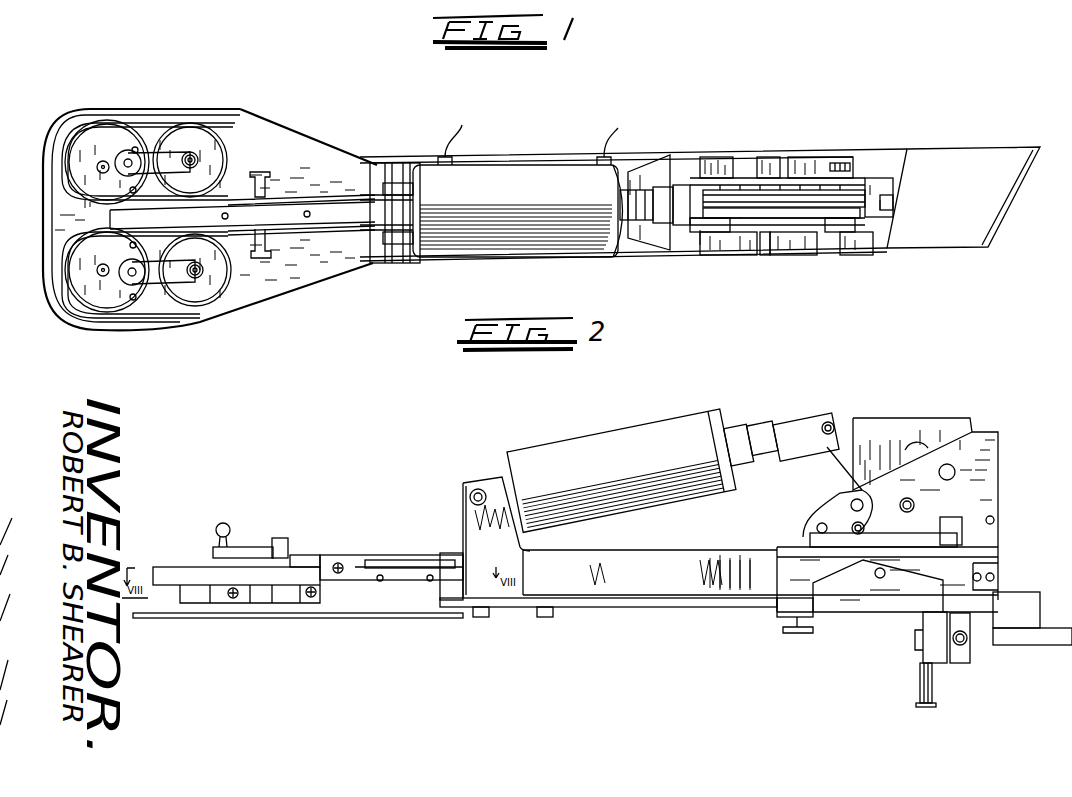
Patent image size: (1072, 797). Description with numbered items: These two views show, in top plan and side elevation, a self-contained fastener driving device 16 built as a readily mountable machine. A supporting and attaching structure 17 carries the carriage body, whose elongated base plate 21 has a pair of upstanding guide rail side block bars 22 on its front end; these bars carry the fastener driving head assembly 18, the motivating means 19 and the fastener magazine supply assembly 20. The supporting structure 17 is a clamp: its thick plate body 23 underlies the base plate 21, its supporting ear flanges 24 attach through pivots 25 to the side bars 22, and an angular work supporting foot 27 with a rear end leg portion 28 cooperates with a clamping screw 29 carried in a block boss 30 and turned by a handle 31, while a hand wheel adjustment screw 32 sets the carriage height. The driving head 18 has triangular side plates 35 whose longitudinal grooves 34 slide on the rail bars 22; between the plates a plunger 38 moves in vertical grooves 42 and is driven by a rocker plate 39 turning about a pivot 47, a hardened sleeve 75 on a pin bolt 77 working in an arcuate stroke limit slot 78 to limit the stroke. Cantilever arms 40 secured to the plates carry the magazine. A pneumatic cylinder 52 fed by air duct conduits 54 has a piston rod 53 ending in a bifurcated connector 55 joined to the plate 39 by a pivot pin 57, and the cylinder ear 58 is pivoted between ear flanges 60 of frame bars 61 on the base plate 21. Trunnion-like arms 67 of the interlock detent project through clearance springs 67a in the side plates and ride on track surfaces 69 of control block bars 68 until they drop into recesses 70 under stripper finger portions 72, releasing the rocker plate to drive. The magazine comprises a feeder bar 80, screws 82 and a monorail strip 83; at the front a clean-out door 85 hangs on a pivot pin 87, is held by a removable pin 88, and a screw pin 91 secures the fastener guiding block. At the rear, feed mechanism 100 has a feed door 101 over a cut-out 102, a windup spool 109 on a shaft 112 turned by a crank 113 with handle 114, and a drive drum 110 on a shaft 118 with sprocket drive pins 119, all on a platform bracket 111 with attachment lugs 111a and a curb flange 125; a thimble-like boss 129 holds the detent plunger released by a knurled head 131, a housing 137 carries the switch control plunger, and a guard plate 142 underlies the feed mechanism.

In FIG. 2, the skiving apparatus 16 is at (656, 614).
In FIG. 2, the supporting and attaching structure 17 is at (881, 636).
In FIG. 2, the fastener driving head assembly 18 is at (794, 519).
In FIG. 1, the motivating means 19 is at (680, 174).
In FIG. 2, the motivating means 19 is at (873, 411).
In FIG. 1, the fastener magazine supply assembly 20 is at (346, 169).
In FIG. 2, the fastener magazine supply assembly 20 is at (369, 544).
In FIG. 1, the base plate 21 is at (620, 258).
In FIG. 2, the base plate 21 is at (612, 596).
In FIG. 2, the head supporting and guide rail side block bars 22 is at (960, 565).
In FIG. 1, the plate body 23 is at (910, 156).
In FIG. 2, the plate body 23 is at (990, 600).
In FIG. 1, the supporting ear flanges 24 is at (765, 170).
In FIG. 2, the supporting ear flanges 24 is at (843, 606).
In FIG. 2, the pivots 25 is at (880, 595).
In FIG. 1, the work supporting foot 27 is at (945, 250).
In FIG. 2, the work supporting foot 27 is at (1015, 636).
In FIG. 1, the rear end leg portion 28 is at (930, 170).
In FIG. 2, the clamping screw 29 is at (963, 645).
In FIG. 2, the block boss 30 is at (920, 648).
In FIG. 2, the handle 31 is at (915, 690).
In FIG. 2, the hand wheel adjustment screw 32 is at (783, 631).
In FIG. 2, the longitudinal grooves 34 is at (1000, 545).
In FIG. 1, the side plates 35 is at (782, 182).
In FIG. 2, the side plates 35 is at (990, 486).
In FIG. 1, the blade driving plunger 38 is at (885, 208).
In FIG. 2, the blade driving plunger 38 is at (985, 426).
In FIG. 1, the rocker lever arm plate 39 is at (770, 250).
In FIG. 2, the rocker lever arm plate 39 is at (890, 420).
In FIG. 1, the cantilever arms 40 is at (376, 165).
In FIG. 2, the cantilever arms 40 is at (461, 600).
In FIG. 1, the vertical grooves 42 is at (875, 180).
In FIG. 2, the pivot 47 is at (914, 505).
In FIG. 1, the pneumatic cylinder 52 is at (488, 202).
In FIG. 2, the pneumatic cylinder 52 is at (598, 442).
In FIG. 1, the piston rod 53 is at (647, 200).
In FIG. 2, the piston rod 53 is at (760, 440).
In FIG. 1, the air duct conduits 54 is at (460, 123).
In FIG. 1, the bifurcated connector 55 is at (688, 245).
In FIG. 2, the bifurcated connector 55 is at (800, 432).
In FIG. 2, the pivot pin 57 is at (830, 425).
In FIG. 1, the ear 58 is at (415, 206).
In FIG. 2, the ear 58 is at (492, 481).
In FIG. 1, the supporting ear flanges 60 is at (386, 190).
In FIG. 2, the supporting ear flanges 60 is at (470, 516).
In FIG. 1, the frame bars 61 is at (634, 170).
In FIG. 2, the frame bars 61 is at (660, 567).
In FIG. 1, the trunnion-like arms 67 is at (760, 152).
In FIG. 2, the trunnion-like arms 67 is at (862, 493).
In FIG. 2, the clearance springs 67a is at (845, 507).
In FIG. 1, the control block bars 68 is at (735, 160).
In FIG. 2, the control block bars 68 is at (852, 505).
In FIG. 1, the guide rail track surfaces 69 is at (718, 165).
In FIG. 2, the guide rail track surfaces 69 is at (883, 544).
In FIG. 2, the detent releasing recesses 70 is at (940, 526).
In FIG. 2, the stripper finger portions 72 is at (998, 513).
In FIG. 1, the hardened sleeve 75 is at (838, 230).
In FIG. 1, the supporting rod pin bolt 77 is at (855, 240).
In FIG. 2, the supporting rod pin bolt 77 is at (955, 470).
In FIG. 2, the arcuate stroke limit slot 78 is at (925, 446).
In FIG. 1, the feeder bar 80 is at (110, 212).
In FIG. 2, the screws 82 is at (335, 588).
In FIG. 1, the monorail suspension track plate strip 83 is at (348, 270).
In FIG. 2, the monorail suspension track plate strip 83 is at (420, 560).
In FIG. 1, the clean-out door 85 is at (892, 193).
In FIG. 2, the pivot pin 87 is at (998, 520).
In FIG. 2, the removable pin 88 is at (1003, 586).
In FIG. 2, the screw pin 91 is at (967, 644).
In FIG. 1, the feed mechanism 100 is at (205, 115).
In FIG. 2, the feed mechanism 100 is at (164, 552).
In FIG. 1, the feed door 101 is at (296, 196).
In FIG. 2, the feed door 101 is at (412, 590).
In FIG. 2, the upper marginal cut-out 102 is at (430, 560).
In FIG. 1, the windup drum disk spool 109 is at (225, 120).
In FIG. 2, the windup drum disk spool 109 is at (305, 553).
In FIG. 1, the drive drum wheel 110 is at (102, 160).
In FIG. 1, the platform bracket 111 is at (236, 200).
In FIG. 2, the platform bracket 111 is at (210, 600).
In FIG. 2, the attachment lugs 111a is at (250, 604).
In FIG. 2, the shaft 112 is at (283, 538).
In FIG. 1, the crank 113 is at (160, 142).
In FIG. 2, the crank 113 is at (245, 547).
In FIG. 1, the handle 114 is at (120, 298).
In FIG. 2, the handle 114 is at (224, 522).
In FIG. 1, the shaft 118 is at (100, 265).
In FIG. 1, the sprocket drive pins 119 is at (130, 150).
In FIG. 1, the curb flange 125 is at (146, 118).
In FIG. 2, the curb flange 125 is at (190, 572).
In FIG. 1, the thimble-like boss 129 is at (265, 172).
In FIG. 1, the knurled head 131 is at (240, 145).
In FIG. 2, the knurled head 131 is at (345, 582).
In FIG. 1, the housing 137 is at (150, 300).
In FIG. 1, the guard plate 142 is at (288, 290).
In FIG. 2, the guard plate 142 is at (235, 610).